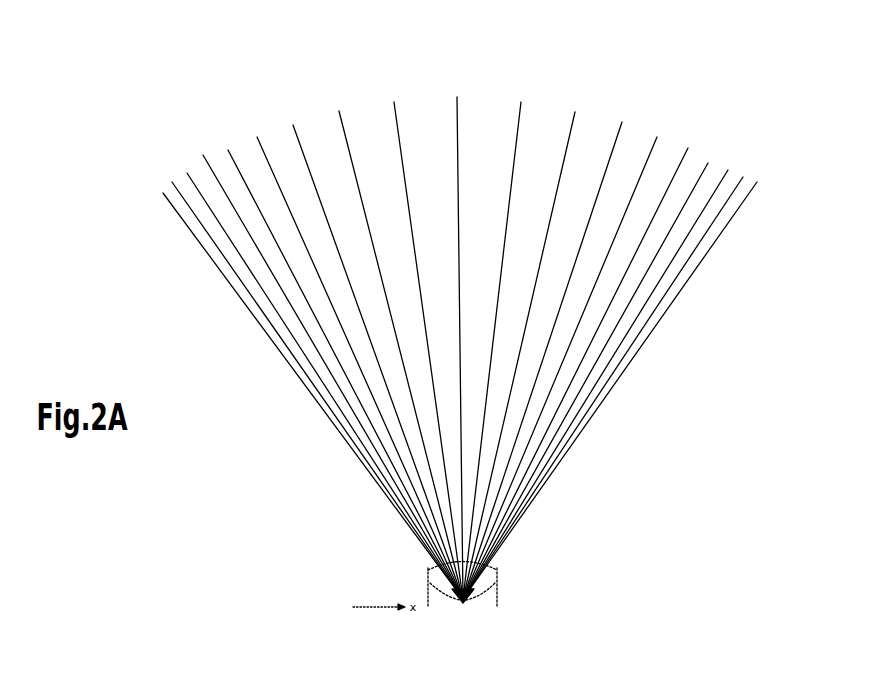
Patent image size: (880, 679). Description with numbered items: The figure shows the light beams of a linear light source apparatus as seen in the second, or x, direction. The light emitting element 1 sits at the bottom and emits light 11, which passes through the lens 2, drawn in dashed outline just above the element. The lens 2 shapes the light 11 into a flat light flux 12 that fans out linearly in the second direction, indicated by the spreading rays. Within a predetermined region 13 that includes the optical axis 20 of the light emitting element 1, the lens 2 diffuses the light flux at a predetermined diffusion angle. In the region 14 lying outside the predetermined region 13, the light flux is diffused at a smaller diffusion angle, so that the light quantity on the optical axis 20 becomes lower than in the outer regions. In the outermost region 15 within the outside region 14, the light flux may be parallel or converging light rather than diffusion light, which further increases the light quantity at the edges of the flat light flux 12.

The light emitting element 1 is at (463, 604).
The lens 2 is at (498, 572).
The light 11 is at (470, 603).
The flat light flux 12 is at (457, 303).
The predetermined region 13 is at (459, 303).
The region 14 is at (457, 314).
The outermost region 15 is at (459, 356).
The optical axis 20 is at (481, 345).